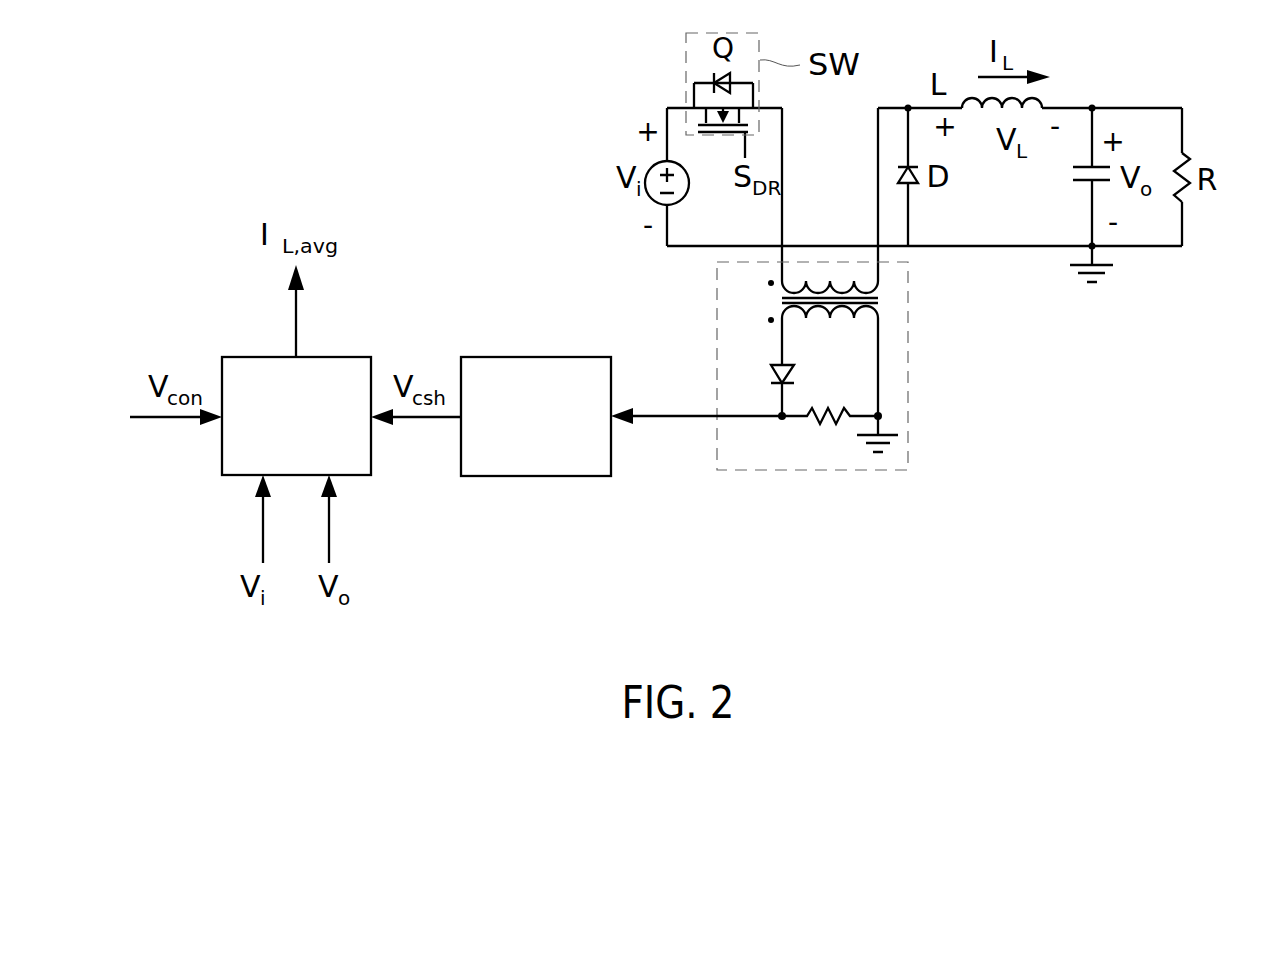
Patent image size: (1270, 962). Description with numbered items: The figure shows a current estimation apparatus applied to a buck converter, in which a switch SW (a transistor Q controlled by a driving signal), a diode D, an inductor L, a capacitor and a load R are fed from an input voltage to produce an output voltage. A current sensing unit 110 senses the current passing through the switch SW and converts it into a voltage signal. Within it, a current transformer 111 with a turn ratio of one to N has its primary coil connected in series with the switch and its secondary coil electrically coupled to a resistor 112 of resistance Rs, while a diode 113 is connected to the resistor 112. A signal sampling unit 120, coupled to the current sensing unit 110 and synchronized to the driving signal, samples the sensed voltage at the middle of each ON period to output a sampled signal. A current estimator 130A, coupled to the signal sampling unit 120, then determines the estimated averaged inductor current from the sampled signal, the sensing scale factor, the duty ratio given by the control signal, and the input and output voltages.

The current sensing unit 110 is at (908, 400).
The current transformer 111 is at (878, 273).
The resistor 112 is at (835, 423).
The diode 113 is at (772, 372).
The signal sampling unit 120 is at (537, 476).
The current estimator 130A is at (335, 357).